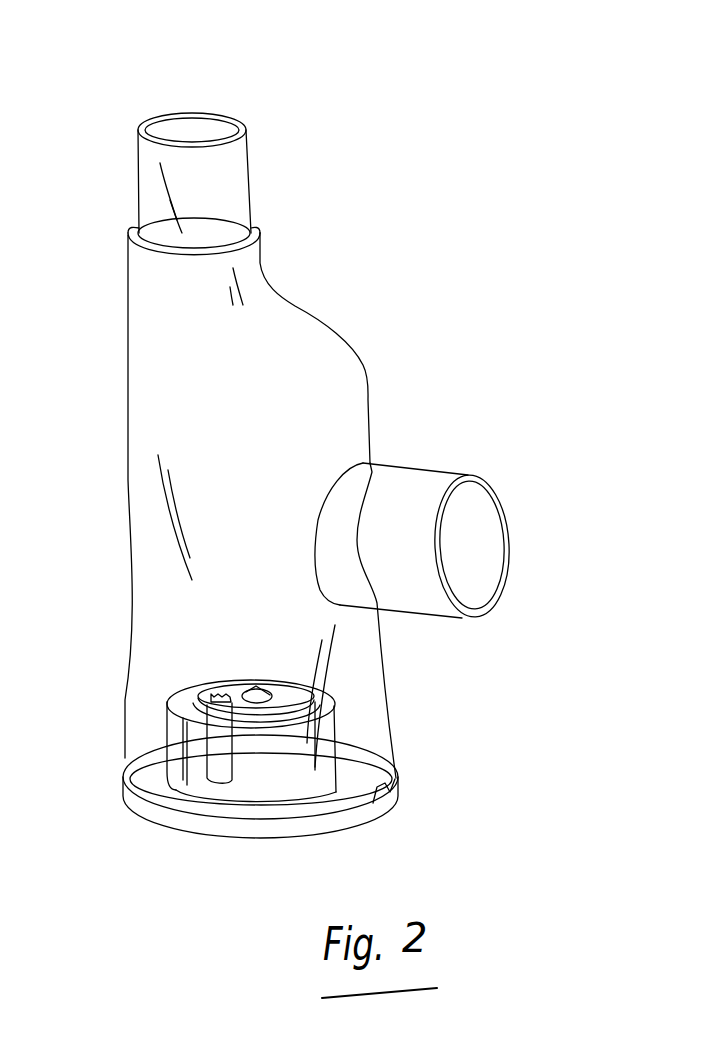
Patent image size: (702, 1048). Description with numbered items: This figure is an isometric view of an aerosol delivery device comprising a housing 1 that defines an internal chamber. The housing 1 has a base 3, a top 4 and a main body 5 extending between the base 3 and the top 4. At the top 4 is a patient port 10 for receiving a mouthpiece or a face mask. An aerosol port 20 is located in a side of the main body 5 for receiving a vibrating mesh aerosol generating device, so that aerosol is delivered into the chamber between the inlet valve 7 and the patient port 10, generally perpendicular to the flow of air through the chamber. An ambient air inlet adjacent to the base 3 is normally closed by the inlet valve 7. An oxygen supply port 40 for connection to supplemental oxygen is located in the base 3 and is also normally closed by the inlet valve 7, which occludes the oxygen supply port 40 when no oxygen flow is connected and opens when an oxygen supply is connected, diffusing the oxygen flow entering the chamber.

The housing 1 is at (413, 345).
The base 3 is at (212, 827).
The top 4 is at (243, 147).
The main body 5 is at (130, 480).
The inlet valve 7 is at (292, 694).
The patient port 10 is at (192, 128).
The aerosol port 20 is at (433, 488).
The oxygen supply port 40 is at (220, 762).